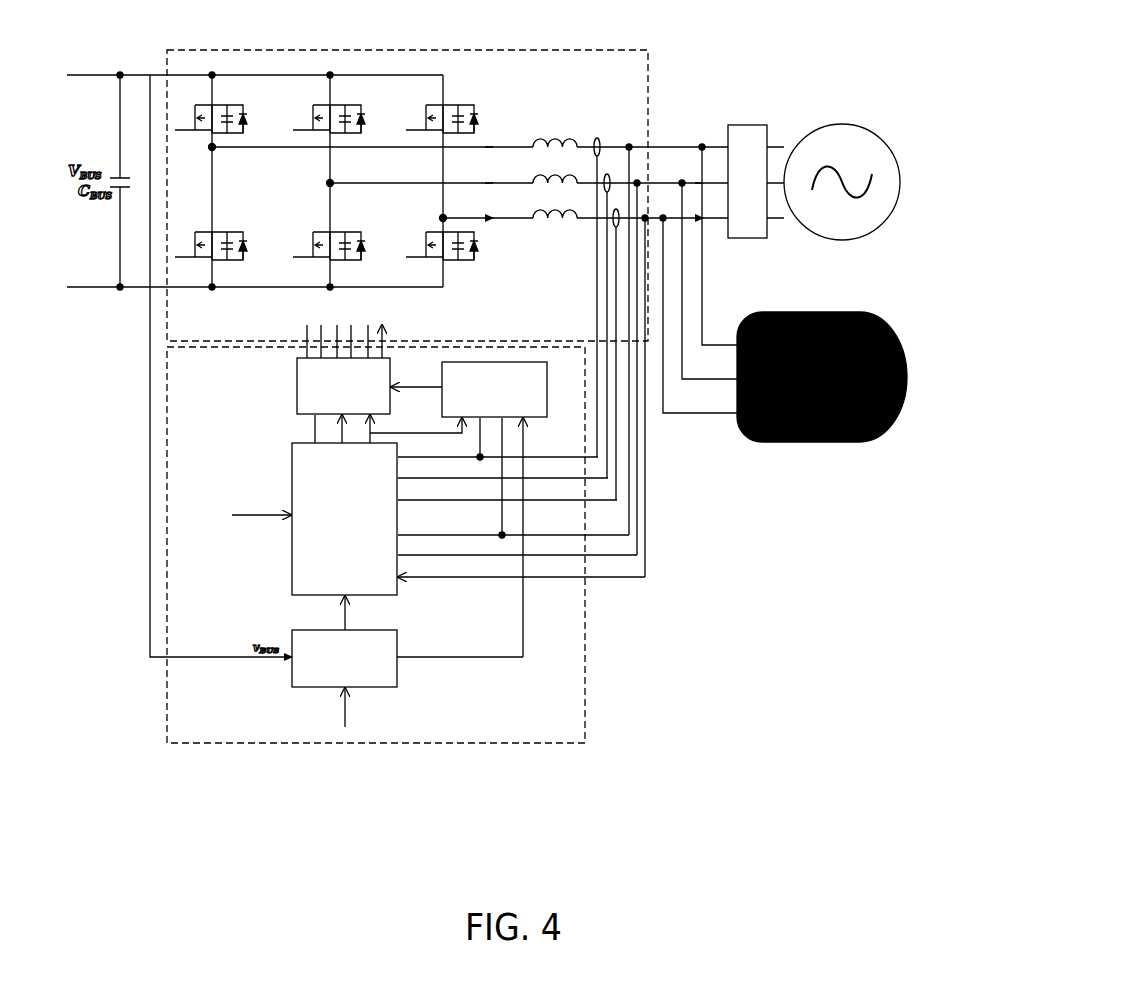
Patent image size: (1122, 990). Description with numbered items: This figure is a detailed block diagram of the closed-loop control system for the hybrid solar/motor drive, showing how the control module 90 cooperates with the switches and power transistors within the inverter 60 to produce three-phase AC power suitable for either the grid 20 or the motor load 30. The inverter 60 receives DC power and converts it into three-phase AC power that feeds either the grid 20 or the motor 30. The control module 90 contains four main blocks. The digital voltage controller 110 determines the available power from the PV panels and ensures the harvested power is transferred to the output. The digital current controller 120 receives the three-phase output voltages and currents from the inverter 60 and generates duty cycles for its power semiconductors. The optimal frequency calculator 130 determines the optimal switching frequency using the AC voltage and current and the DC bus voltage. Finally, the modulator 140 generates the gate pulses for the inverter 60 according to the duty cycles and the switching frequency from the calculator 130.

The grid 20 is at (903, 132).
The motor load 30 is at (890, 312).
The inverter 60 is at (650, 78).
The control module 90 is at (459, 505).
The digital voltage controller 110 is at (290, 678).
The digital current controller 120 is at (423, 536).
The optimal frequency calculator 130 is at (492, 361).
The modulator 140 is at (293, 388).